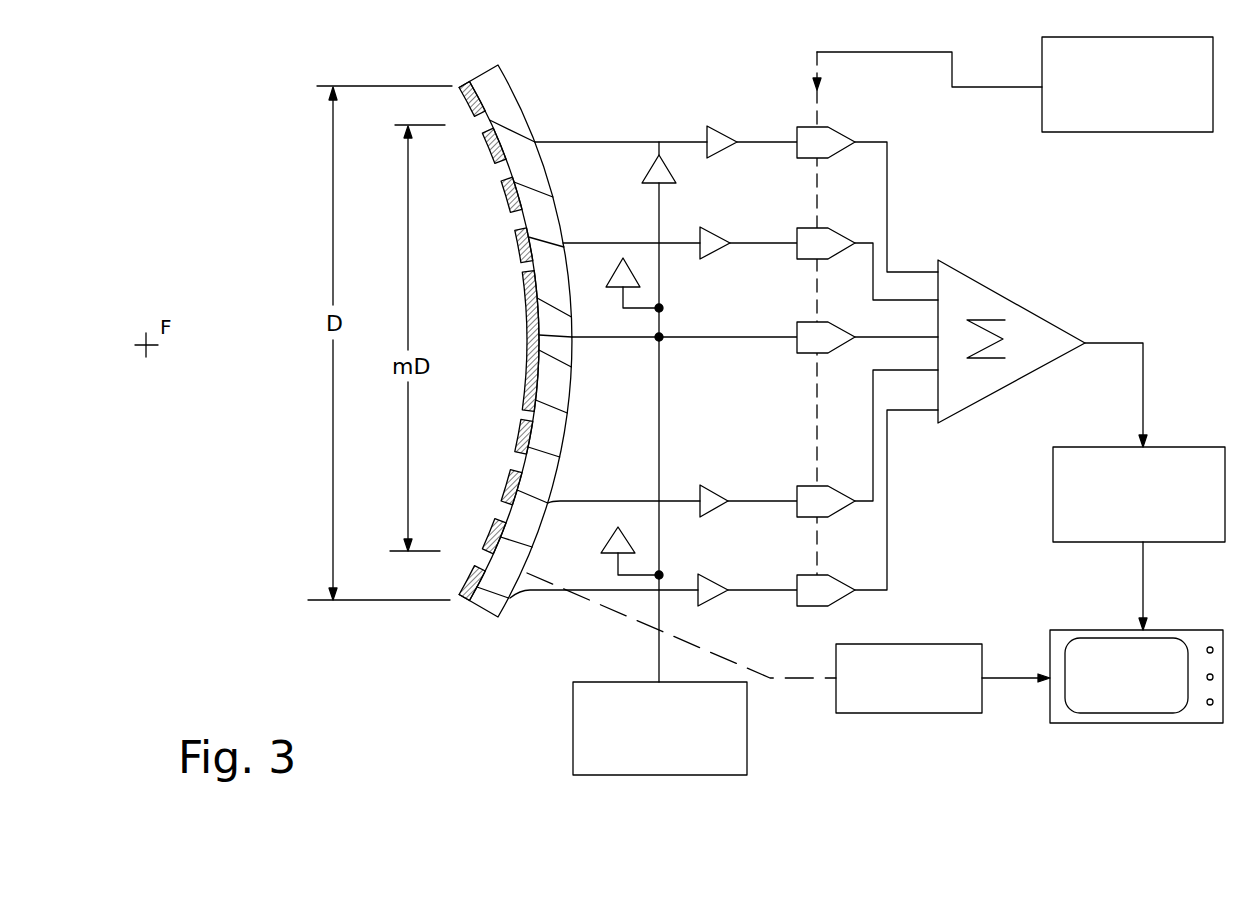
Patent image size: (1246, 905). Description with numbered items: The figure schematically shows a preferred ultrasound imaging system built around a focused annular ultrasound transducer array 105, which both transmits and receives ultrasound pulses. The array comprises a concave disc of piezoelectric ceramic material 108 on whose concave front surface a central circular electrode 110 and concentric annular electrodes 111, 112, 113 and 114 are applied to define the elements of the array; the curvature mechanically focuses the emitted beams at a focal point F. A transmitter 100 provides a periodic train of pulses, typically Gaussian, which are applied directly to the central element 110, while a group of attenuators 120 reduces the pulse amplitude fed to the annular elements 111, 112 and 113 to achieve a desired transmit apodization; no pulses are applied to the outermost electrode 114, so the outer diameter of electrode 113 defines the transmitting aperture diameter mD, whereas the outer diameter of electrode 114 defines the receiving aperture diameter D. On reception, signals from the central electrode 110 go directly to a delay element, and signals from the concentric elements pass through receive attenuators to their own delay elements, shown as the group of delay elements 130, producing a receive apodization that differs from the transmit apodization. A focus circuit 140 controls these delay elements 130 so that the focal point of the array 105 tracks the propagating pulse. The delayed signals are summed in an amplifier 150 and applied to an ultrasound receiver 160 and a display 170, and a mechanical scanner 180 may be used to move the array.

The transmitter 100 is at (660, 728).
The focused annular ultrasound transducer array 105 is at (466, 632).
The concave disc of piezoelectric ceramic material 108 is at (502, 93).
The central circular electrode 110 is at (527, 289).
The annular electrode 111 is at (519, 435).
The annular electrode 112 is at (512, 474).
The annular electrode 113 is at (490, 138).
The annular electrode 114 is at (467, 93).
The group of attenuators 120 is at (680, 123).
The delay lines 130 is at (849, 122).
The focus circuit 140 is at (1127, 84).
The amplifier 150 is at (1011, 341).
The ultrasound receiver 160 is at (1139, 494).
The display 170 is at (1185, 637).
The mechanical scanner 180 is at (754, 643).